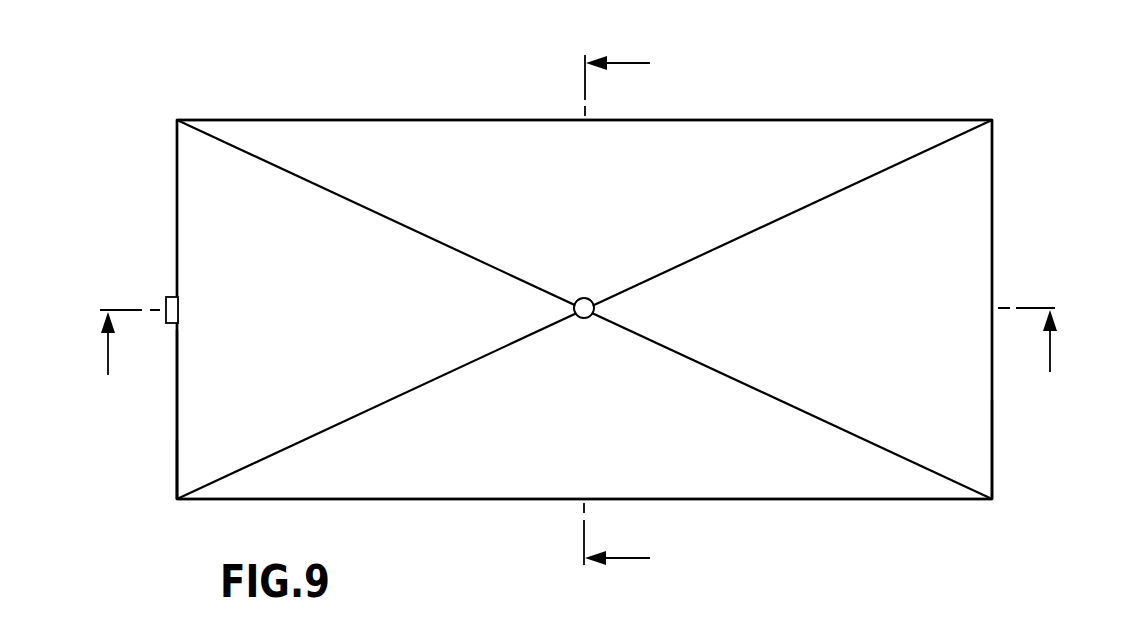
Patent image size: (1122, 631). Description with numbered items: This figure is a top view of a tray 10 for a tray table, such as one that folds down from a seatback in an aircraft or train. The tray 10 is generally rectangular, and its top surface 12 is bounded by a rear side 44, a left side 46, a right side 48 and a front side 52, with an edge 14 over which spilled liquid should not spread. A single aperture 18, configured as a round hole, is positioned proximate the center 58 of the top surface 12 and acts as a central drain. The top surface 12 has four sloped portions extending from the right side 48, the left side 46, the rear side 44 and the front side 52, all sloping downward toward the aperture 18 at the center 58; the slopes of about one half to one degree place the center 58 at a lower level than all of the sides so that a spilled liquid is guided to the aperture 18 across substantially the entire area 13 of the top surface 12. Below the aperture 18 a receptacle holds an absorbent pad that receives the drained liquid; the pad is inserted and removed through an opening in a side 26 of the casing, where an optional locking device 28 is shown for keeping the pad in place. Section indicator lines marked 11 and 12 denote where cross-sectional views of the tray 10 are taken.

The tray 10 is at (1022, 127).
The section line 11- 11 is at (617, 313).
The top surface 12 is at (577, 349).
The area of the top surface 13 is at (190, 185).
The edge 14 is at (992, 241).
The aperture 18 is at (582, 315).
The side of the casing 26 is at (176, 447).
The locking device 28 is at (171, 297).
The rear side 44 is at (783, 119).
The left side 46 is at (186, 375).
The right side 48 is at (992, 435).
The front side 52 is at (782, 500).
The center of the top surface 58 is at (584, 308).